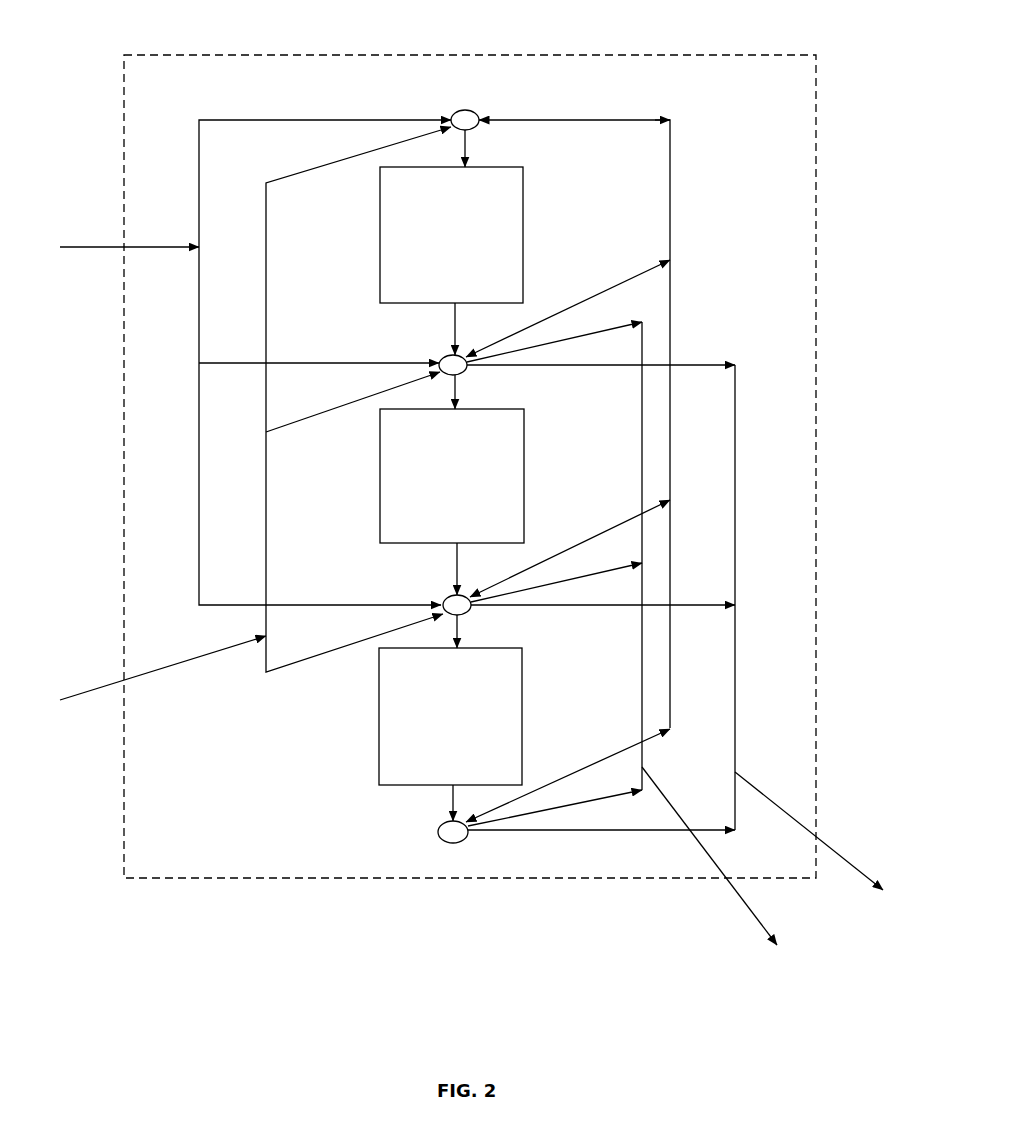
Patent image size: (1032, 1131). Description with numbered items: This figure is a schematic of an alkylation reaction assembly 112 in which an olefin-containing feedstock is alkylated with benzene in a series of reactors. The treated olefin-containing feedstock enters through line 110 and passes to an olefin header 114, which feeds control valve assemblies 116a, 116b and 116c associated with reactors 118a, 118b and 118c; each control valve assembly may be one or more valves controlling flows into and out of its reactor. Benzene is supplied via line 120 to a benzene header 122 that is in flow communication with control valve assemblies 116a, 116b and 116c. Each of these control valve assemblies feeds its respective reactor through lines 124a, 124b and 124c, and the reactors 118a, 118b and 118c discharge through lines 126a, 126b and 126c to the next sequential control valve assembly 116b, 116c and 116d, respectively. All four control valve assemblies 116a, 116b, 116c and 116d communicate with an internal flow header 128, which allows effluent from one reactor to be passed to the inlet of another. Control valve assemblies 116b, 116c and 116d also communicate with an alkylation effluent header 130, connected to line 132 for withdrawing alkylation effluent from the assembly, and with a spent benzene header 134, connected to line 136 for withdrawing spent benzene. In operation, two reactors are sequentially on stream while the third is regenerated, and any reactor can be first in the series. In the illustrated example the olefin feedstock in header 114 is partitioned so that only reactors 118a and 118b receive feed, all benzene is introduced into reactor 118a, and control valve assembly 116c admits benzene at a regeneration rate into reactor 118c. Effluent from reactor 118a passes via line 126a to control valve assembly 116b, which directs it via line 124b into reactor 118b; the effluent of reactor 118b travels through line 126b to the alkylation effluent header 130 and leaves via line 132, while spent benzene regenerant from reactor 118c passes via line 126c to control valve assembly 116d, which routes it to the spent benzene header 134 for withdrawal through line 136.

The line 110 is at (104, 243).
The alkylation reaction assembly 112 is at (255, 838).
The olefin header 114 is at (199, 141).
The control valve assembly 116a is at (465, 110).
The control valve assembly 116b is at (443, 357).
The control valve assembly 116c is at (445, 597).
The control valve assembly 116d is at (453, 833).
The reactor 118a is at (497, 228).
The reactor 118b is at (497, 496).
The reactor 118c is at (500, 727).
The line 120 is at (110, 683).
The benzene header 122 is at (300, 663).
The line 124a is at (470, 134).
The line 124b is at (462, 384).
The line 124c is at (465, 623).
The line 126a is at (459, 308).
The line 126b is at (463, 570).
The line 126c is at (440, 798).
The internal flow header 128 is at (672, 180).
The alkylation effluent header 130 is at (735, 470).
The line 132 is at (853, 866).
The spent benzene header 134 is at (640, 690).
The line 136 is at (738, 900).